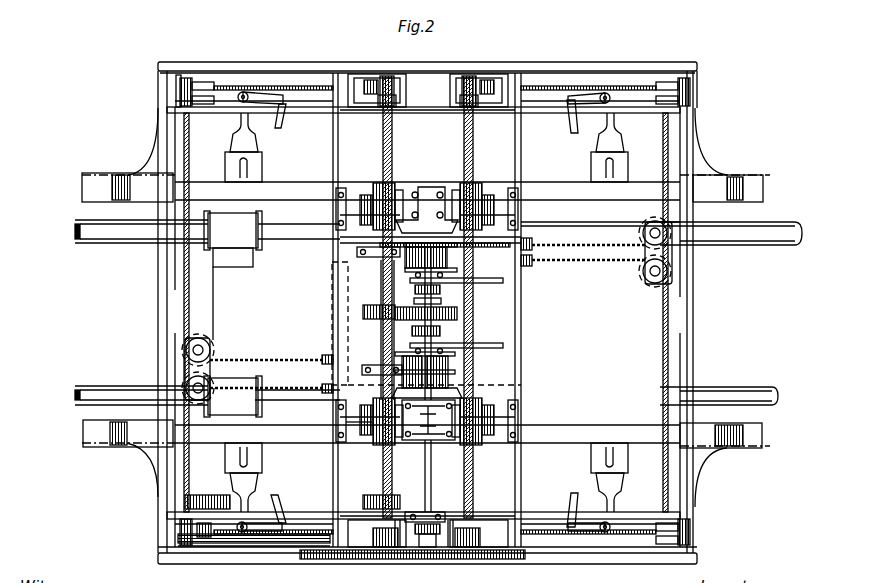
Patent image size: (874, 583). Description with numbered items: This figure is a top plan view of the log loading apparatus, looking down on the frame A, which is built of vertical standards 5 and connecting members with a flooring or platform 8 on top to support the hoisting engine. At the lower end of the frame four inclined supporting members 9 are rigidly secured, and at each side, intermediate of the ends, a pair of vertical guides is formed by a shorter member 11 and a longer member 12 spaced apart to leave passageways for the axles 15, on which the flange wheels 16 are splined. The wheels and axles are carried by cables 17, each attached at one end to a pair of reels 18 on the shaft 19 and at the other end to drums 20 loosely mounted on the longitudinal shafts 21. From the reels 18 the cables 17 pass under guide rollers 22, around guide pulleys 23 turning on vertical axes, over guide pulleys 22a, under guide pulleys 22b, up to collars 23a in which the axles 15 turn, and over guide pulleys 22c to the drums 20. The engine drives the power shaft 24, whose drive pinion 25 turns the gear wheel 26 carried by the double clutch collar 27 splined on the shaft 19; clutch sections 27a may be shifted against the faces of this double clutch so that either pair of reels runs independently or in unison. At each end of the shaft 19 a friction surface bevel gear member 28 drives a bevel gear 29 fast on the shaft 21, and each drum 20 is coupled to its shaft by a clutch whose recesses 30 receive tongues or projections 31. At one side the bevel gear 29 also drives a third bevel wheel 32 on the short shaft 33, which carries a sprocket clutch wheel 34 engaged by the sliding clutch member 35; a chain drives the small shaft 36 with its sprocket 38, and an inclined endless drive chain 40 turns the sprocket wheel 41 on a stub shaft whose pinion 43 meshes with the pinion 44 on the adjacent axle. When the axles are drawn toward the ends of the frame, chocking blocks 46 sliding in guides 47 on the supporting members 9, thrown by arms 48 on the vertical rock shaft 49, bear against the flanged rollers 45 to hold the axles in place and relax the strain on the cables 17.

The vertical standards 5 is at (157, 100).
The flooring or platform 8 is at (340, 240).
The inclined supporting members 9 is at (248, 190).
The guide member 11 is at (373, 109).
The guide member 12 is at (449, 88).
The axles 15 is at (392, 148).
The flange wheels 16 is at (333, 250).
The cables 17 is at (570, 243).
The reels 18 is at (404, 262).
The shaft 19 is at (434, 305).
The drums 20 is at (374, 188).
The shafts 21 is at (440, 200).
The guide rollers 22 is at (527, 237).
The guide pulleys 22a is at (178, 92).
The guide pulleys 22b is at (200, 78).
The guide pulleys 22c is at (461, 103).
The guide pulleys 23 is at (205, 340).
The collars 23a is at (385, 77).
The power shaft 24 is at (381, 298).
The drive pinion 25 is at (372, 319).
The gear wheel 26 is at (458, 313).
The double clutch collar 27 is at (420, 294).
The clutch sections 27a is at (441, 290).
The friction surface bevel gear member 28 is at (400, 200).
The bevel gear 29 is at (456, 192).
The notches or recesses 30 is at (505, 197).
The tongues or projections 31 is at (337, 222).
The third bevel wheel 32 is at (431, 472).
The short shaft 33 is at (400, 502).
The sprocket clutch wheel 34 is at (428, 550).
The sliding clutch member 35 is at (412, 552).
The small shaft 36 is at (283, 520).
The sprocket 38 is at (330, 560).
The endless drive chain 40 is at (275, 545).
The sprocket wheel 41 is at (175, 548).
The pinion 43 is at (215, 496).
The pinion 44 is at (366, 426).
The flanged rollers 45 is at (362, 193).
The chocking blocks 46 is at (233, 137).
The guides 47 is at (225, 161).
The arms 48 is at (271, 93).
The vertical rock shaft 49 is at (576, 134).
The frame A is at (649, 51).